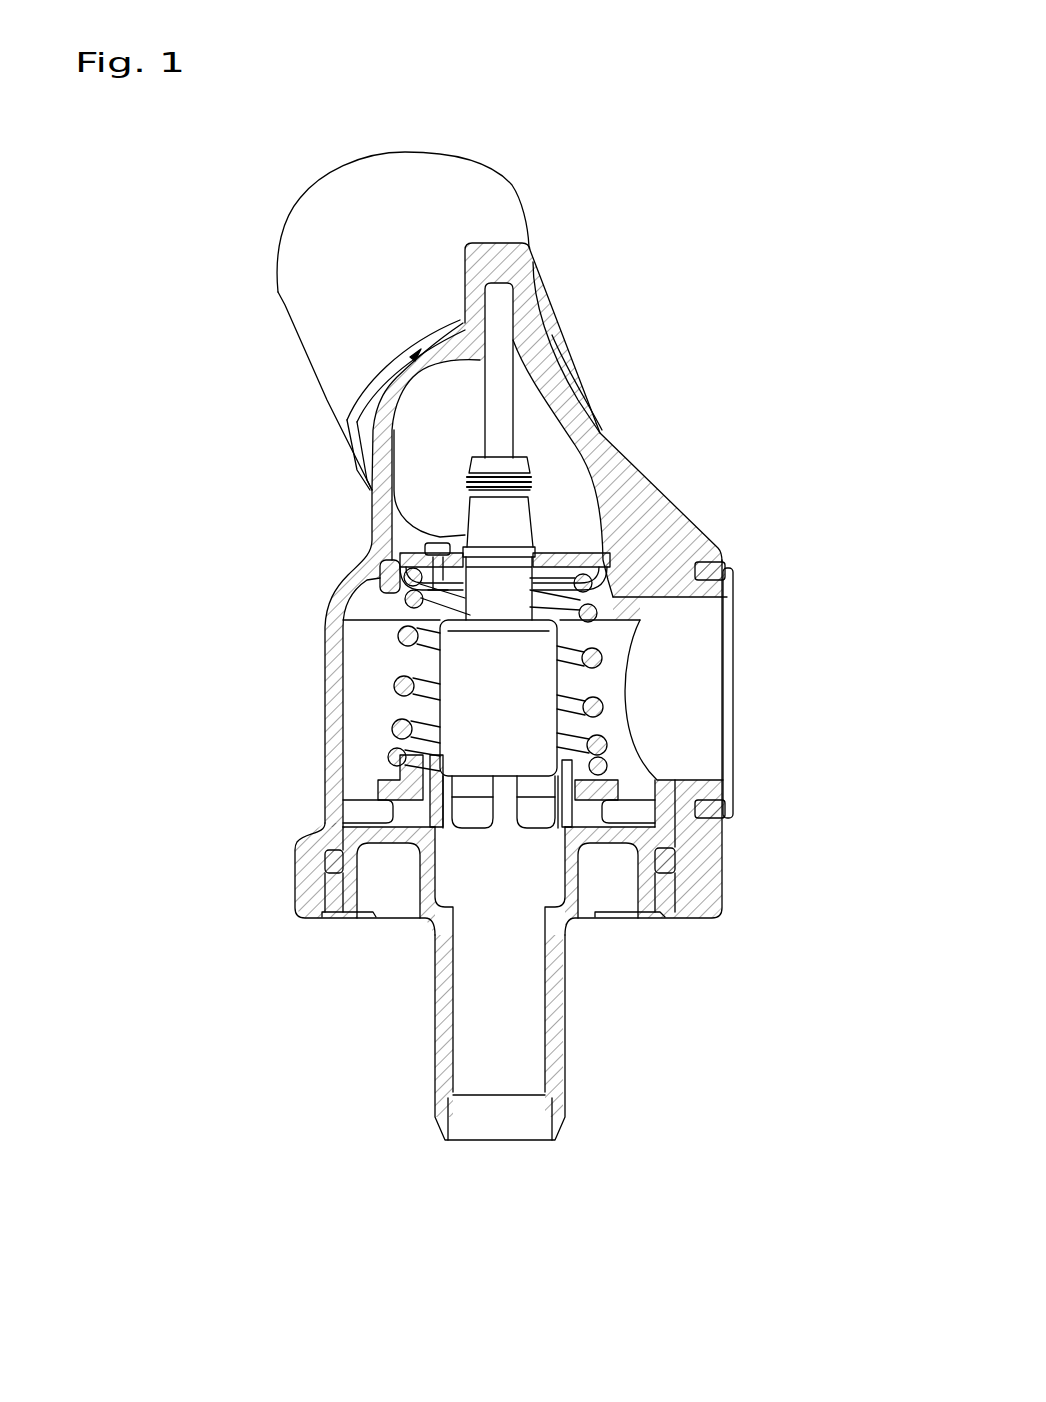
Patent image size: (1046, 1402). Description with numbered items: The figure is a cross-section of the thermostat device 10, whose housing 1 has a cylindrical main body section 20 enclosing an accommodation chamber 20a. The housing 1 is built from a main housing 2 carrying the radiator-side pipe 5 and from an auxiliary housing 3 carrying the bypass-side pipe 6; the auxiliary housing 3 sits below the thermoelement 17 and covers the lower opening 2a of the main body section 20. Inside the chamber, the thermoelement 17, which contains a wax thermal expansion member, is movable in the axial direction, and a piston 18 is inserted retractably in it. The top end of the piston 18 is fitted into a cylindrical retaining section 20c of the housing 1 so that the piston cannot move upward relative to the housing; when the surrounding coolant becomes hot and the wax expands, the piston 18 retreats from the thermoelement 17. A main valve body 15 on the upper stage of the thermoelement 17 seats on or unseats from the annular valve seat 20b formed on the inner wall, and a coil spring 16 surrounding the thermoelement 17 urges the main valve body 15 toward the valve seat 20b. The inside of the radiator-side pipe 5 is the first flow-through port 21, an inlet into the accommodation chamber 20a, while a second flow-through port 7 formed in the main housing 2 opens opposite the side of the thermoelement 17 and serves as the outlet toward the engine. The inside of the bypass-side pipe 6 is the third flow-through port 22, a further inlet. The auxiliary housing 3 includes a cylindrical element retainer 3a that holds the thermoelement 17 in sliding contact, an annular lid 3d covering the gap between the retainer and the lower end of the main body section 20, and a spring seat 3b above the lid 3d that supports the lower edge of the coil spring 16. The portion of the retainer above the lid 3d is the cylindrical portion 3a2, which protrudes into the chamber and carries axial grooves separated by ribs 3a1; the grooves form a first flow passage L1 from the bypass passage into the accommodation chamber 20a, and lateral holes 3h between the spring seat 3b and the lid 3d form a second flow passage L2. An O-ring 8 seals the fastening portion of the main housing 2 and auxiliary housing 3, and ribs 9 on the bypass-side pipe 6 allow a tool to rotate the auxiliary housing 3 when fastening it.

The housing 1 is at (322, 601).
The main housing 2 is at (367, 560).
The lower opening 2a is at (678, 910).
The auxiliary housing 3 is at (577, 927).
The element retainer 3a is at (507, 787).
The rib 3a1 is at (444, 897).
The cylindrical portion 3a2 is at (640, 778).
The spring seat 3b is at (385, 783).
The lid 3d is at (647, 893).
The lateral hole 3h is at (392, 805).
The radiator-side pipe 5 is at (361, 272).
The bypass-side pipe 6 is at (510, 1042).
The second flow-through port 7 is at (685, 686).
The O-ring 8 is at (330, 868).
The rib 9 is at (615, 890).
The thermostat device 10 is at (142, 155).
The main valve body 15 is at (450, 618).
The coil spring 16 is at (398, 684).
The thermoelement 17 is at (472, 708).
The piston 18 is at (503, 402).
The main body section 20 is at (328, 687).
The accommodation chamber 20a is at (365, 738).
The valve seat 20b is at (642, 605).
The retaining section 20c is at (507, 325).
The first flow-through port 21 is at (447, 397).
The third flow-through port 22 is at (497, 1158).
The first flow passage L1 is at (312, 920).
The second flow passage L2 is at (390, 806).